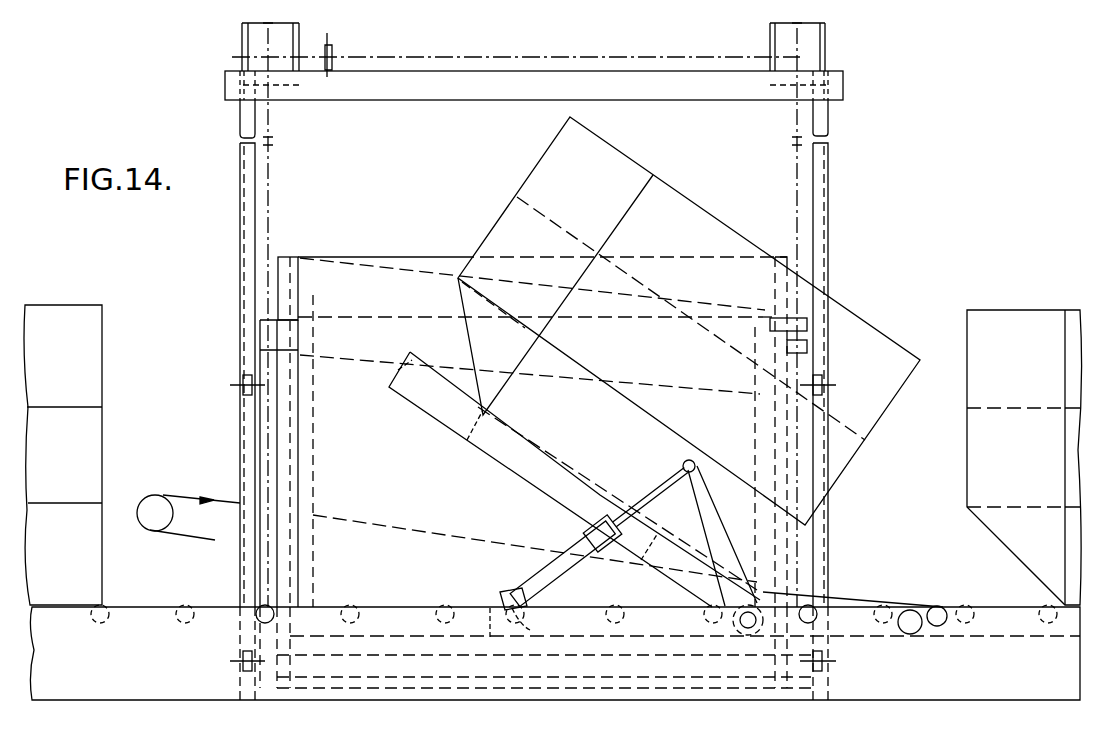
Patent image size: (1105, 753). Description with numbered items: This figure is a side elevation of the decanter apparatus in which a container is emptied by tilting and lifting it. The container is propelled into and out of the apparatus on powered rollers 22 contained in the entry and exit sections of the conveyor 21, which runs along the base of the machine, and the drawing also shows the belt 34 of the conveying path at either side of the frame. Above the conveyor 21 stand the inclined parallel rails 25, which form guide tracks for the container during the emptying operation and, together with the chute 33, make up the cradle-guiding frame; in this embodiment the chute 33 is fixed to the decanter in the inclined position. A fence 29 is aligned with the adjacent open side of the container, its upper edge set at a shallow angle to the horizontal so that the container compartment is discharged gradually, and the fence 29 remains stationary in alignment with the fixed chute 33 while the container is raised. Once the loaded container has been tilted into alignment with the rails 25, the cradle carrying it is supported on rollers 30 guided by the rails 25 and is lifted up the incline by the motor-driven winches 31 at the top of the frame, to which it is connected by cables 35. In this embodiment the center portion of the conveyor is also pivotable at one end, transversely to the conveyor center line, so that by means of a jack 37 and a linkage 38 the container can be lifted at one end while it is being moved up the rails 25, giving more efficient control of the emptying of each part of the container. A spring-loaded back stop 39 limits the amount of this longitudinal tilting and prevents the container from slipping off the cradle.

The conveyor 21 is at (163, 672).
The powered rollers 22 is at (185, 605).
The inclined parallel rails 25 is at (240, 231).
The fence 29 is at (455, 266).
The rollers 30 is at (246, 377).
The winches 31 is at (258, 32).
The chute 33 is at (318, 349).
The conveyor belt 34 is at (190, 495).
The cables 35 is at (270, 216).
The jack 37 is at (590, 552).
The linkage 38 is at (723, 532).
The spring-loaded back stop 39 is at (765, 600).